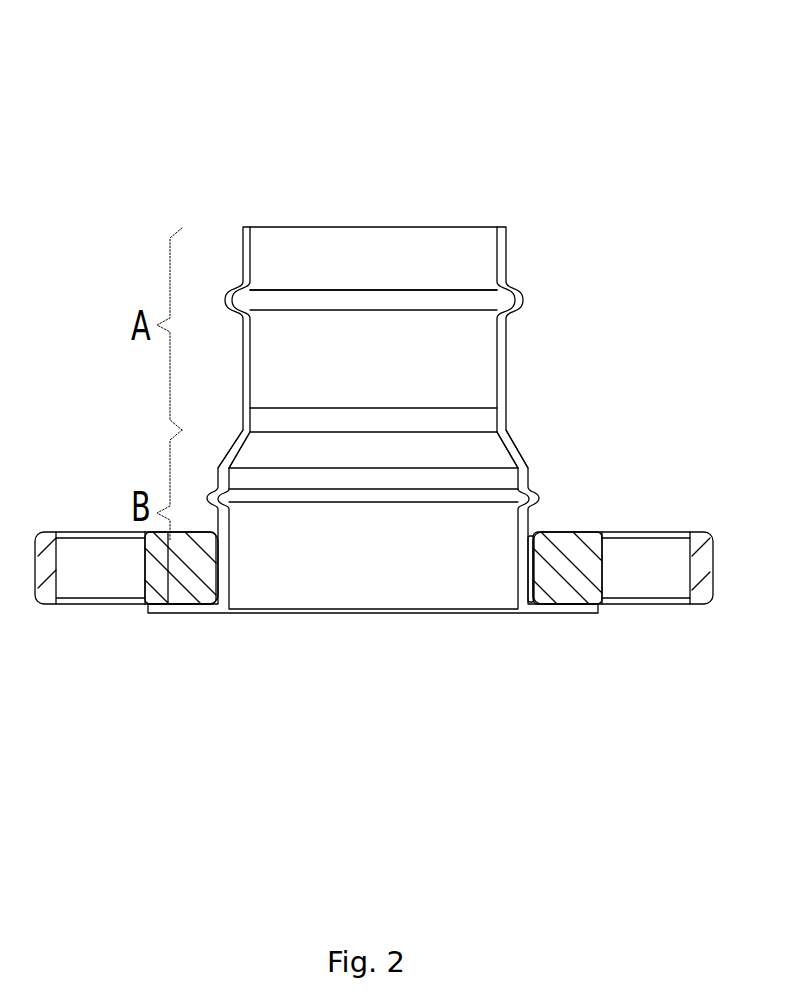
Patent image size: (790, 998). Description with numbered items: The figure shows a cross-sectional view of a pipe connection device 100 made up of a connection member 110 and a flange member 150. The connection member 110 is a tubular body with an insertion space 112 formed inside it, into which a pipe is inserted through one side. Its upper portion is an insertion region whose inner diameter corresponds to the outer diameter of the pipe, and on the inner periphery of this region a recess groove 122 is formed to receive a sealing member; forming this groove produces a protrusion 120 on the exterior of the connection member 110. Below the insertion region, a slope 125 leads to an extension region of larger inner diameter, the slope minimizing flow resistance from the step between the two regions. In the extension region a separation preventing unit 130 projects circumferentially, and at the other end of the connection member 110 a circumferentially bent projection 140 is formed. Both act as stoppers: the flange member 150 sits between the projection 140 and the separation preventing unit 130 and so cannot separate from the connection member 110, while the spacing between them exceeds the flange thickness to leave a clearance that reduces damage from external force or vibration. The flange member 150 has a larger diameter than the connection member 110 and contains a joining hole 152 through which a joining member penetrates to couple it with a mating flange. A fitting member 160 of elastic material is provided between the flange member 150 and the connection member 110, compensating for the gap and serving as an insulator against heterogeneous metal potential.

The pipe connection device 100 is at (122, 60).
The connection member 110 is at (527, 172).
The insertion space 112 is at (383, 380).
The protrusion 120 is at (521, 296).
The recess groove 122 is at (291, 303).
The slope 125 is at (516, 443).
The separation preventing unit 130 is at (543, 498).
The projection 140 is at (192, 606).
The flange member 150 is at (88, 626).
The joining hole 152 is at (640, 578).
The fitting member 160 is at (527, 573).